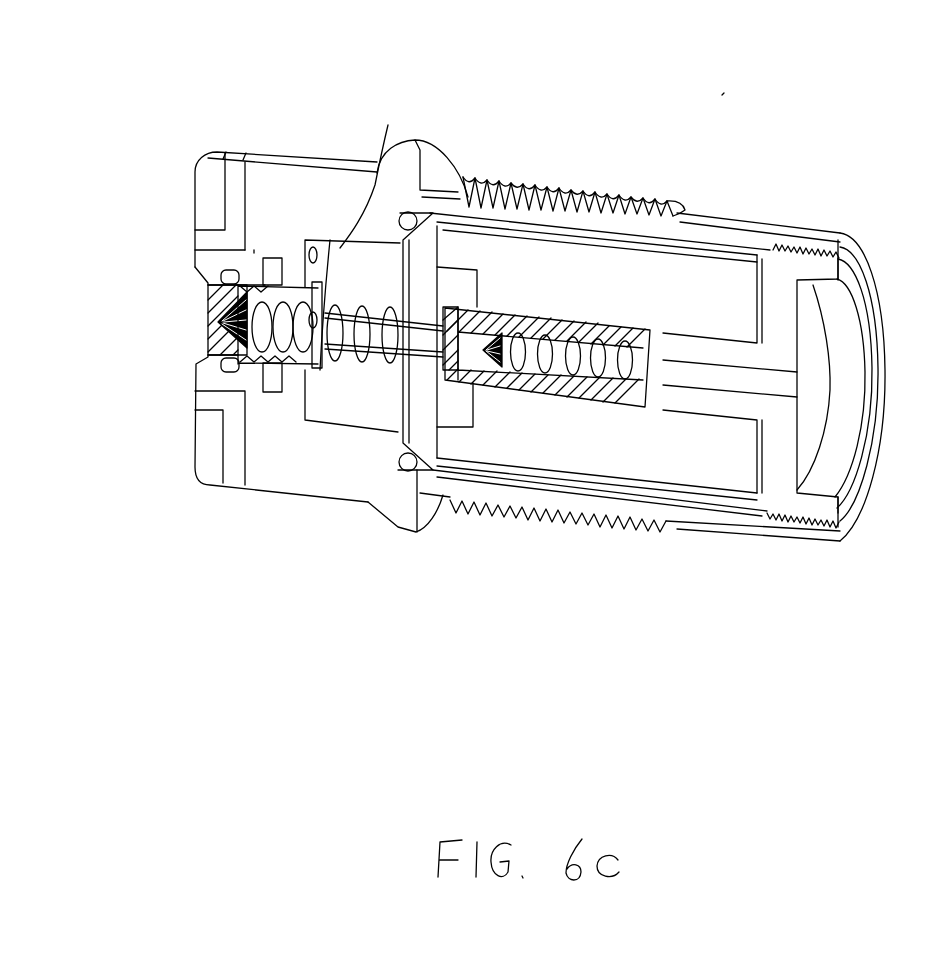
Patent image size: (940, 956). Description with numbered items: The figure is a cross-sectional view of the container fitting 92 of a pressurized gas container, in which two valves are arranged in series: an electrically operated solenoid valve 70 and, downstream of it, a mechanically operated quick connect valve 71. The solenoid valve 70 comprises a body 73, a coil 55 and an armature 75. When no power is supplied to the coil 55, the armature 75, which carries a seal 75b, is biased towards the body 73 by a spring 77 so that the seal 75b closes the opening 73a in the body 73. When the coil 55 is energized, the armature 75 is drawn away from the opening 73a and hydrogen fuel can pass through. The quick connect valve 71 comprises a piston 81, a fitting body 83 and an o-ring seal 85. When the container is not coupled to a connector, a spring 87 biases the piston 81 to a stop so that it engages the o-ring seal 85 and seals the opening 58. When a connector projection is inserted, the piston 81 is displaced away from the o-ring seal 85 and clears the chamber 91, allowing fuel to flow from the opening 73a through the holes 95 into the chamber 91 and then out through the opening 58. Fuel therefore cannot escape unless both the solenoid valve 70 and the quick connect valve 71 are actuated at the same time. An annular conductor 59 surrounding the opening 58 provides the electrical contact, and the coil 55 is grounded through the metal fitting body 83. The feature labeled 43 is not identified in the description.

The coil 55 is at (605, 460).
The opening 58 is at (195, 313).
The annular conductor 59 is at (206, 196).
The solenoid valve 70 is at (457, 294).
The quick connect valve 71 is at (265, 247).
The body 73 is at (428, 445).
The opening 73a is at (413, 368).
The armature 75 is at (495, 403).
The seal 75b is at (452, 335).
The spring 77 is at (648, 343).
The piston 81 is at (197, 348).
The fitting body 83 is at (335, 370).
The o-ring seal 85 is at (223, 368).
The spring 87 is at (365, 368).
The chamber 91 is at (280, 367).
The container fitting 92 is at (740, 93).
The holes 95 is at (388, 135).
The slot 43 is at (238, 173).